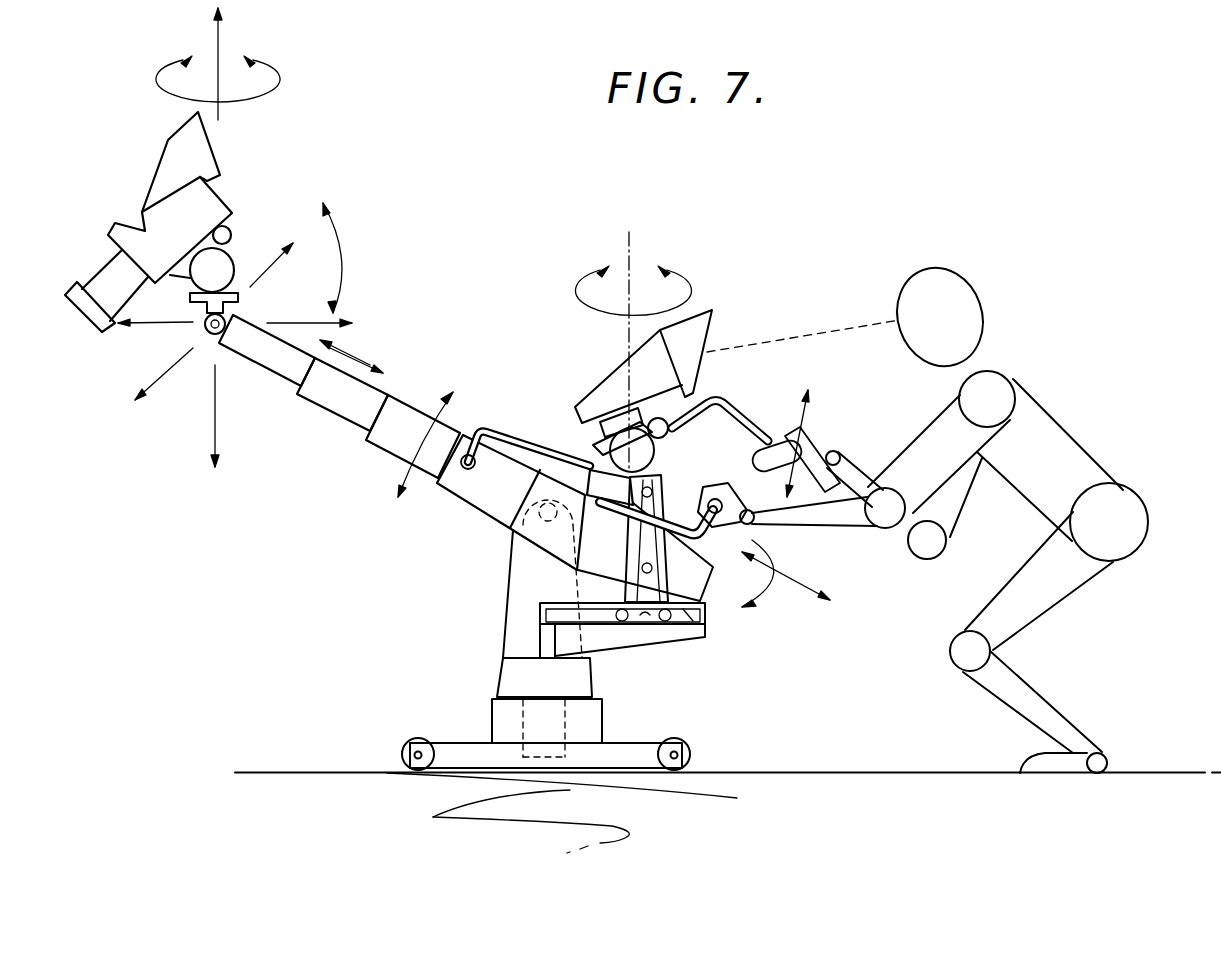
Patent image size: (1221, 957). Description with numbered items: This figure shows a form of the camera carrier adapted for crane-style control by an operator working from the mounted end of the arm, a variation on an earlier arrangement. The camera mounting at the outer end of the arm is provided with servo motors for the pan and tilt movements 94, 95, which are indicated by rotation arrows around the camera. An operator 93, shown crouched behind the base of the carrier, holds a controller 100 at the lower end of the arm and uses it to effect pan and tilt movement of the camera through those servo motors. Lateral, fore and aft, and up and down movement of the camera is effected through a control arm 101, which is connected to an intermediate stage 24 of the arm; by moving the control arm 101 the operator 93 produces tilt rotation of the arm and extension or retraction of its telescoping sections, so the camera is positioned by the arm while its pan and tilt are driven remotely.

The intermediate stage 24 is at (478, 500).
The camera operator 93 is at (1058, 423).
The pan movement 94 is at (345, 236).
The tilt movement 95 is at (272, 66).
The controller 100 is at (733, 403).
The control arm 101 is at (505, 420).